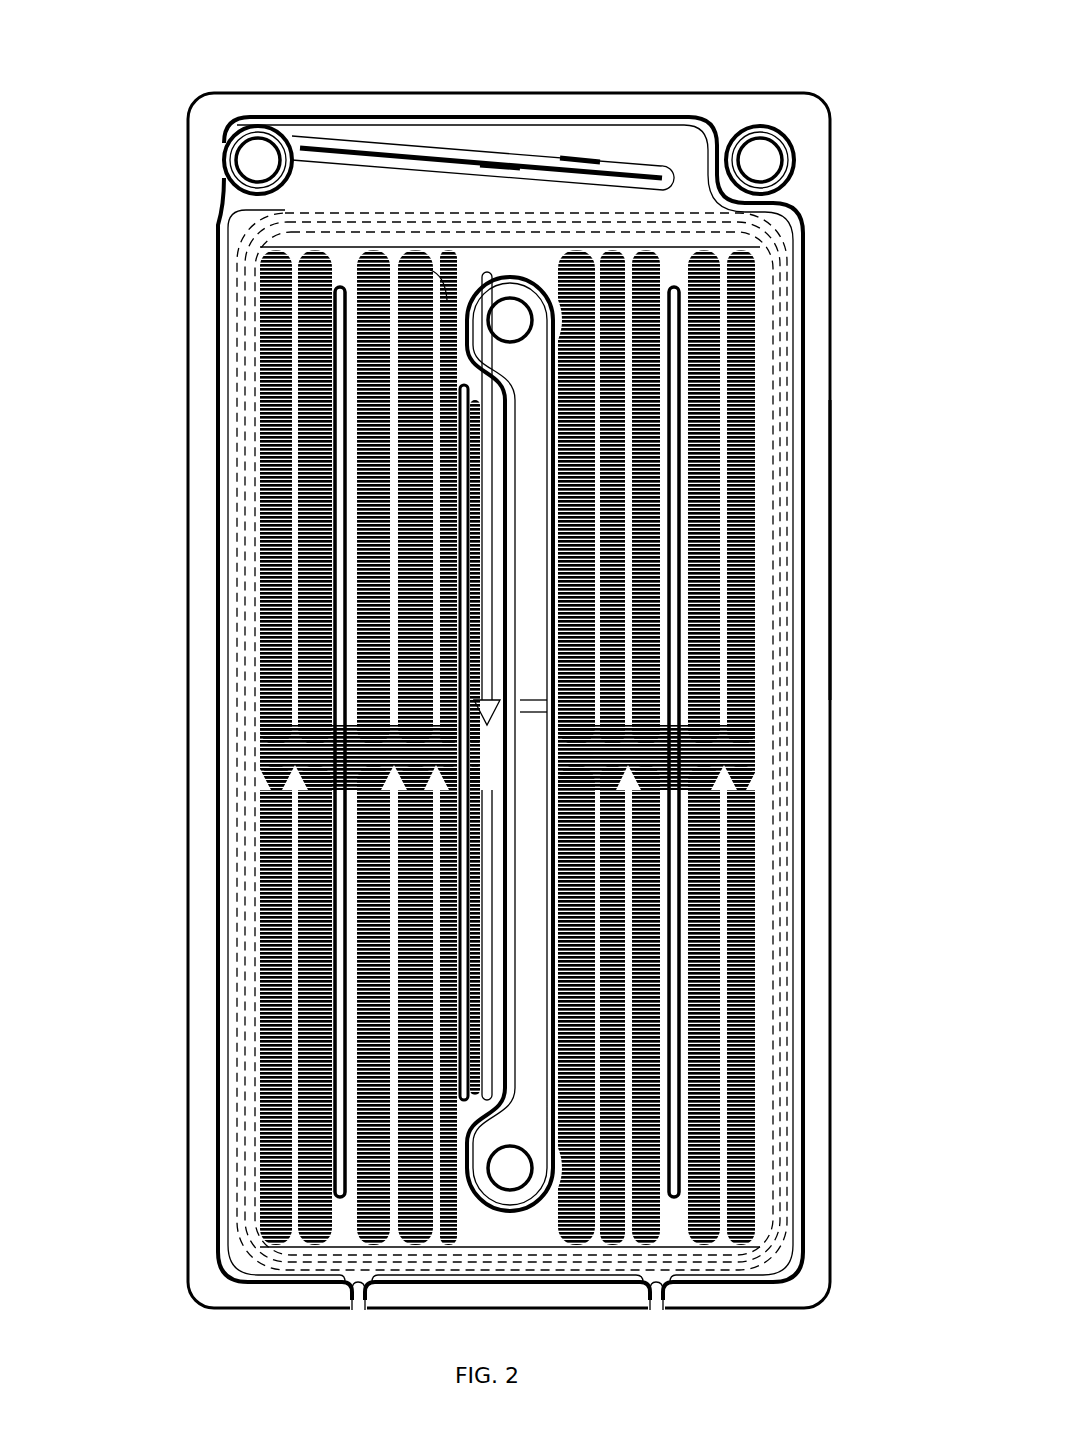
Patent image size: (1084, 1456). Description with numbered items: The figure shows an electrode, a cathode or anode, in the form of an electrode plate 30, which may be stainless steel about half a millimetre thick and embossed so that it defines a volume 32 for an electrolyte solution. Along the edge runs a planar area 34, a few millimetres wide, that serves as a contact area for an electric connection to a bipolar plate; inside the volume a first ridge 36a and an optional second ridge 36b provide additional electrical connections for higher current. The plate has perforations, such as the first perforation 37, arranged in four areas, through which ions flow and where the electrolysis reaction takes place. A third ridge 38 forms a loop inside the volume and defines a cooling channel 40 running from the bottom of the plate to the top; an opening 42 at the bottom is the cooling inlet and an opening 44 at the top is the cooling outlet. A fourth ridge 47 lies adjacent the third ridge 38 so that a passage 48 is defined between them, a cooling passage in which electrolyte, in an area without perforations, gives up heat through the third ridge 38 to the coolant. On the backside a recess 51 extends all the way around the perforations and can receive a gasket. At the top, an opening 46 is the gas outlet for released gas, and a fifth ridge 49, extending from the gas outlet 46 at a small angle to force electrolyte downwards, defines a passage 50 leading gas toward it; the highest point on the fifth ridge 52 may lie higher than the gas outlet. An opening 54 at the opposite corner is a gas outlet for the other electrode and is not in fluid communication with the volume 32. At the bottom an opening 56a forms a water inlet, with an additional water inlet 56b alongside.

The electrode plate 30 is at (425, 70).
The volume 32 is at (497, 188).
The area 34 is at (815, 552).
The first ridge 36a is at (673, 285).
The second ridge 36b is at (255, 162).
The first perforation 37 is at (540, 702).
The third ridge 38 is at (535, 280).
The cooling channel 40 is at (525, 712).
The opening 42 is at (512, 1172).
The opening 44 is at (512, 322).
The opening 46 is at (337, 282).
The fourth ridge 47 is at (465, 385).
The passage 48 is at (487, 742).
The fifth ridge 49 is at (445, 305).
The passage 50 is at (573, 140).
The recess 51 is at (462, 215).
The highest point on the fifth ridge 52 is at (325, 130).
The opening 54 is at (762, 158).
The opening 56a is at (652, 1297).
The water inlet 56b is at (356, 1303).